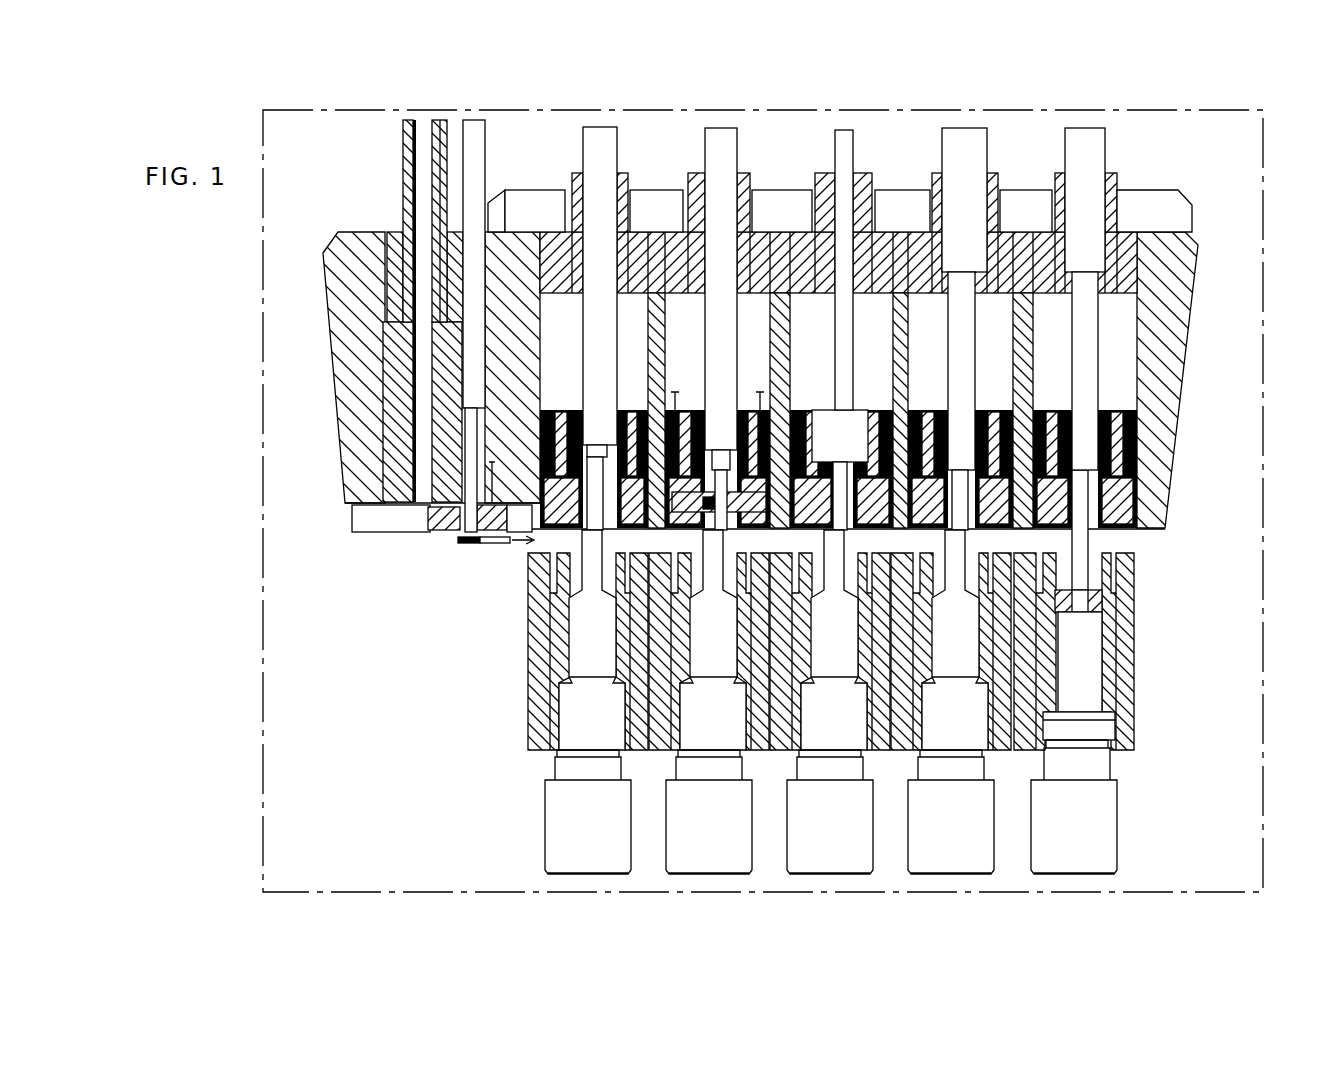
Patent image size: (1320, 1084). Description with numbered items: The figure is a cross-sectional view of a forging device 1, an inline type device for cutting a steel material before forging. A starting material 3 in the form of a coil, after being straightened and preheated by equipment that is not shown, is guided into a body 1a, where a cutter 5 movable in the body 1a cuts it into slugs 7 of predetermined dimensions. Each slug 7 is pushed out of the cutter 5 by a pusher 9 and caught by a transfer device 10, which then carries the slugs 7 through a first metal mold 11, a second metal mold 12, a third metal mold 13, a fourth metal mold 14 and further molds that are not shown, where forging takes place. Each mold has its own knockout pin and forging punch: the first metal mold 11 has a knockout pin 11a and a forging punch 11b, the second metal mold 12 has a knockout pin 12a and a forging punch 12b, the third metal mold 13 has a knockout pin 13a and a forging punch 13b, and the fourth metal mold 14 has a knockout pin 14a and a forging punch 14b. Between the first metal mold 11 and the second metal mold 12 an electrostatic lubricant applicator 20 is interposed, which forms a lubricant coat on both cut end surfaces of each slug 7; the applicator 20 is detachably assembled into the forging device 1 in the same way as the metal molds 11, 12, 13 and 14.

The forging device 1 is at (246, 427).
The body 1a is at (1263, 540).
The starting material 3 is at (420, 148).
The cutter 5 is at (442, 532).
The slug 7 is at (470, 535).
The pusher 9 is at (478, 148).
The transfer device 10 is at (497, 546).
The first metal mold 11 is at (612, 532).
The knockout pin 11a is at (576, 292).
The forging punch 11b is at (585, 540).
The second metal mold 12 is at (852, 533).
The knockout pin 12a is at (836, 466).
The forging punch 12b is at (840, 532).
The third metal mold 13 is at (955, 531).
The knockout pin 13a is at (933, 329).
The forging punch 13b is at (978, 532).
The fourth metal mold 14 is at (1096, 530).
The knockout pin 14a is at (1054, 299).
The forging punch 14b is at (1105, 545).
The electrostatic lubricant applicator 20 is at (728, 525).